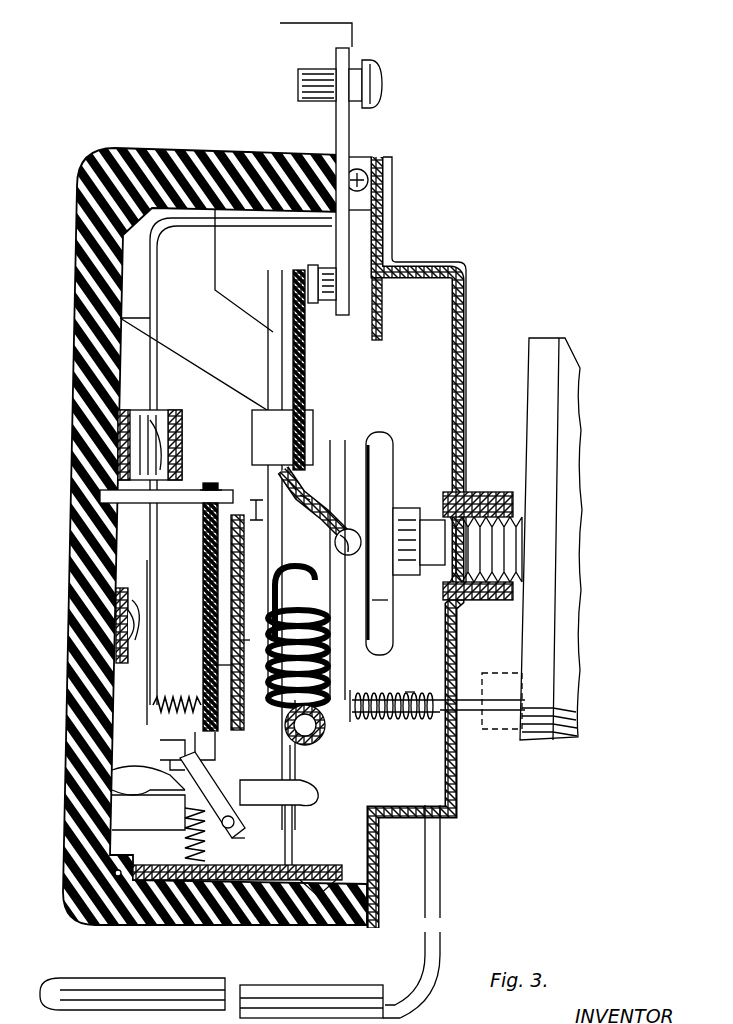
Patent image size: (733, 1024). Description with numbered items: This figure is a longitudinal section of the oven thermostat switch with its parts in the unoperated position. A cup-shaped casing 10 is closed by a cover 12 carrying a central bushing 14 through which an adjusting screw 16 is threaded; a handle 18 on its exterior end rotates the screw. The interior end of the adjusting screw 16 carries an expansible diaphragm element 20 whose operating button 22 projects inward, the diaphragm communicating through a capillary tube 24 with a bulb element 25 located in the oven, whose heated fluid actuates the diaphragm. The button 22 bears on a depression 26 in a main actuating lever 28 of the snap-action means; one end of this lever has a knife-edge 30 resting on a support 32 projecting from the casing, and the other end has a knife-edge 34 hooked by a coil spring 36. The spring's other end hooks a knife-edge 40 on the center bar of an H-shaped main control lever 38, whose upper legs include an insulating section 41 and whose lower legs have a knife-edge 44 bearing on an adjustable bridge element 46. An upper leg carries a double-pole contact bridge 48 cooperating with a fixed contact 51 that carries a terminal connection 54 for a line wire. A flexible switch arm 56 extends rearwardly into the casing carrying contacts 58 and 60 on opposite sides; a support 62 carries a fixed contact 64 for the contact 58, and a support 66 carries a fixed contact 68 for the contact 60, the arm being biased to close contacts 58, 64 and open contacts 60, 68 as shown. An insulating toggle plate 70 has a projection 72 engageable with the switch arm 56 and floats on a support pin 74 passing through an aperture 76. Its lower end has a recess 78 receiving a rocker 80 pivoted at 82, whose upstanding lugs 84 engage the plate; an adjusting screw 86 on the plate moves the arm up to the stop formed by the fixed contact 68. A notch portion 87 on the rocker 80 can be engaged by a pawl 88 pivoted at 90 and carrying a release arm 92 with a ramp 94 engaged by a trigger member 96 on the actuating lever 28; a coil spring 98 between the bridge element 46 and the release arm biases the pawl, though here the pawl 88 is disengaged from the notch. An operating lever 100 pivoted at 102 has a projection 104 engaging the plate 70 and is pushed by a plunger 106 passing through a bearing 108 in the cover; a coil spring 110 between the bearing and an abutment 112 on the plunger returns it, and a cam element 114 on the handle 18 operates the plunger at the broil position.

The cup-shaped casing 10 is at (80, 178).
The cover 12 is at (466, 364).
The bushing 14 is at (492, 495).
The adjusting screw 16 is at (488, 585).
The handle 18 is at (548, 338).
The diaphragm element 20 is at (388, 436).
The operating button 22 is at (348, 528).
The capillary tube 24 is at (440, 833).
The bulb element 25 is at (325, 990).
The depression 26 is at (388, 595).
The main actuating lever 28 is at (340, 663).
The knife-edge 30 is at (300, 470).
The support 32 is at (306, 398).
The knife-edge 34 is at (322, 738).
The coil spring 36 is at (218, 666).
The main control lever 38 is at (305, 498).
The knife-edge 40 is at (290, 590).
The insulating section 41 is at (302, 346).
The knife-edge 44 is at (295, 815).
The adjustable bridge element 46 is at (322, 862).
The double-pole contact bridge 48 is at (302, 323).
The fixed contact 51 is at (335, 275).
The terminal connection 54 is at (366, 105).
The flexible switch arm 56 is at (150, 302).
The contact 58 is at (160, 420).
The contact 60 is at (145, 600).
The support 62 is at (118, 428).
The fixed contact 64 is at (182, 420).
The support 66 is at (116, 648).
The fixed contact 68 is at (116, 616).
The toggle plate 70 is at (210, 484).
The projection 72 is at (192, 505).
The support pin 74 is at (100, 495).
The aperture 76 is at (220, 486).
The recess 78 is at (160, 741).
The rocker 80 is at (220, 770).
The pivot 82 is at (240, 832).
The upstanding lug 84 is at (215, 739).
The adjusting screw 86 is at (185, 696).
The notch portion 87 is at (170, 759).
The pawl 88 is at (112, 790).
The pivot 90 is at (112, 769).
The release arm 92 is at (180, 800).
The ramp 94 is at (318, 790).
The trigger member 96 is at (300, 760).
The coil spring 98 is at (185, 848).
The operating lever 100 is at (231, 648).
The pivot 102 is at (258, 492).
The projection 104 is at (231, 603).
The plunger 106 is at (462, 715).
The bearing 108 is at (355, 722).
The coil spring 110 is at (408, 692).
The abutment 112 is at (445, 690).
The cam element 114 is at (505, 730).